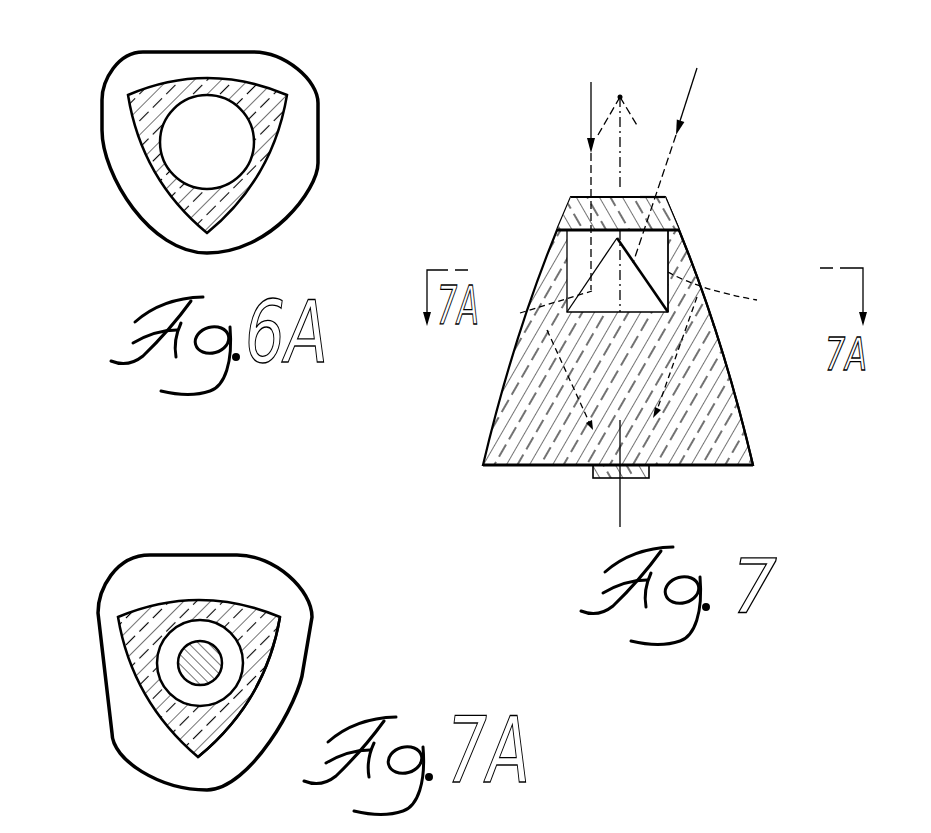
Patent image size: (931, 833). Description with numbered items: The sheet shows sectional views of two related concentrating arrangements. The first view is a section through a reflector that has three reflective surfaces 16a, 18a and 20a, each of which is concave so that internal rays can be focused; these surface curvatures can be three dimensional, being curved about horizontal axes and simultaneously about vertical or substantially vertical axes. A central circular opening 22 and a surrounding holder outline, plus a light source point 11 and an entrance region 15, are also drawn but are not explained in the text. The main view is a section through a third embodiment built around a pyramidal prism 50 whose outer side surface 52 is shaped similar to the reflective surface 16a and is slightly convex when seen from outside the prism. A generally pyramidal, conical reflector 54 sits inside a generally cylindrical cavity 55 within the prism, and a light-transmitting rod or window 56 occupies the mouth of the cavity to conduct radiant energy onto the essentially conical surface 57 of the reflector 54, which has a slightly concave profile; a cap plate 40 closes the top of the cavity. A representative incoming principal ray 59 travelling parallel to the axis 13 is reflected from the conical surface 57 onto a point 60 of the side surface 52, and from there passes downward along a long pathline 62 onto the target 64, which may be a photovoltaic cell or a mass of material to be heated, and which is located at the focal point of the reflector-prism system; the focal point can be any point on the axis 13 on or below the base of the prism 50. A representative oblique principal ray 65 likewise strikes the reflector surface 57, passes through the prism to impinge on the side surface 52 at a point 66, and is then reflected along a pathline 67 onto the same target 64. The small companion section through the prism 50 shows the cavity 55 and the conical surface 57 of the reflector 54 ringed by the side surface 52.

In FIG. 7, the light source point 11 is at (620, 97).
In FIG. 7, the axis 13 is at (620, 168).
In FIG. 7, the light entrance surface 15 is at (647, 197).
In FIG. 6A, the reflective surface 16a is at (253, 185).
In FIG. 6A, the reflective surface 18a is at (177, 207).
In FIG. 6A, the reflective surface 20a is at (238, 82).
In FIG. 6A, the central bore 22 is at (248, 130).
In FIG. 7, the cap plate 40 is at (572, 215).
In FIG. 7, the pyramidal prism 50 is at (732, 430).
In FIG. 7A, the pyramidal prism 50 is at (268, 633).
In FIG. 7, the side surface 52 is at (714, 328).
In FIG. 7A, the side surface 52 is at (253, 690).
In FIG. 7, the reflector 54 is at (622, 295).
In FIG. 7, the cavity 55 is at (667, 255).
In FIG. 7A, the cavity 55 is at (162, 662).
In FIG. 7, the light-transmitting rod or window 56 is at (586, 197).
In FIG. 7, the conical surface 57 is at (590, 262).
In FIG. 7A, the conical surface 57 is at (213, 648).
In FIG. 7, the incoming principal ray 59 is at (590, 135).
In FIG. 7, the point 60 is at (520, 313).
In FIG. 7, the pathline 62 is at (606, 456).
In FIG. 7, the target 64 is at (593, 474).
In FIG. 7, the oblique principal ray 65 is at (685, 112).
In FIG. 7, the point 66 is at (730, 294).
In FIG. 7, the pathline 67 is at (636, 455).